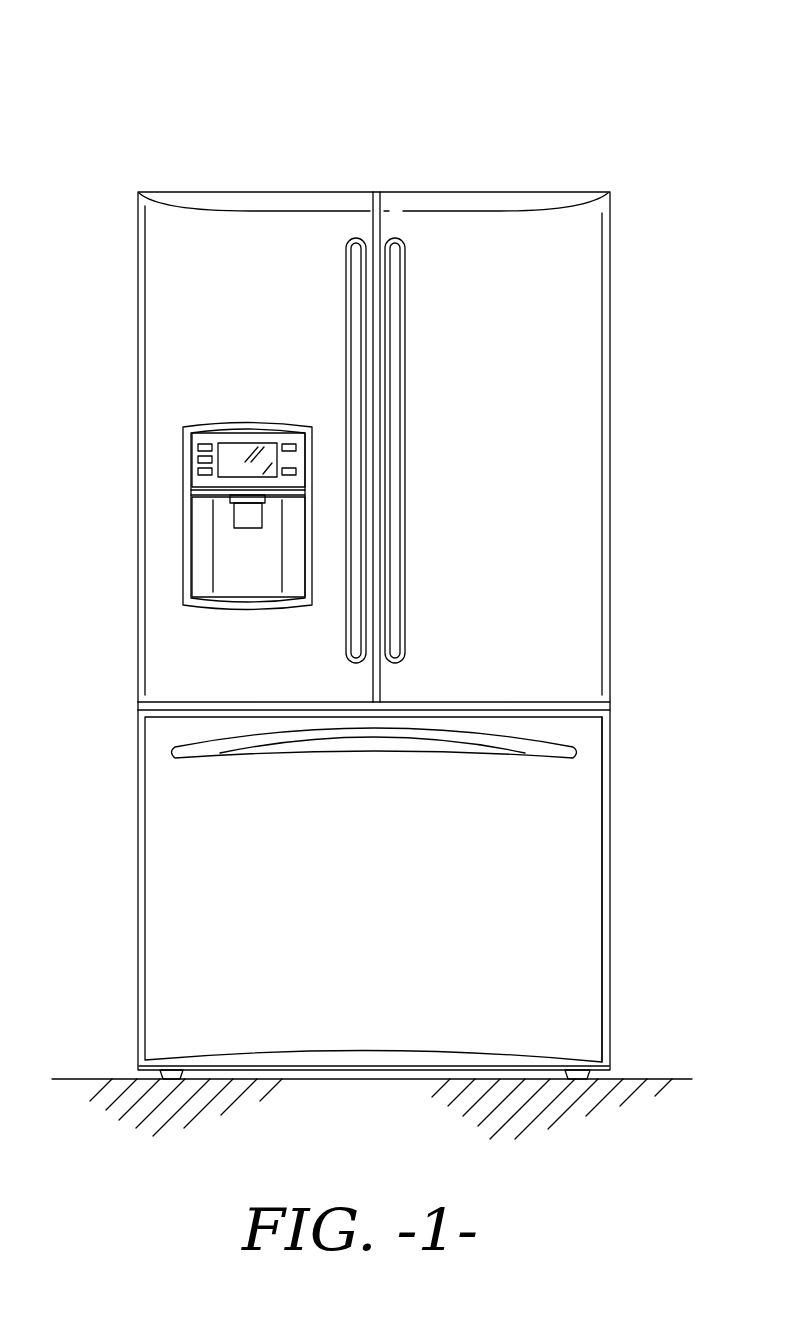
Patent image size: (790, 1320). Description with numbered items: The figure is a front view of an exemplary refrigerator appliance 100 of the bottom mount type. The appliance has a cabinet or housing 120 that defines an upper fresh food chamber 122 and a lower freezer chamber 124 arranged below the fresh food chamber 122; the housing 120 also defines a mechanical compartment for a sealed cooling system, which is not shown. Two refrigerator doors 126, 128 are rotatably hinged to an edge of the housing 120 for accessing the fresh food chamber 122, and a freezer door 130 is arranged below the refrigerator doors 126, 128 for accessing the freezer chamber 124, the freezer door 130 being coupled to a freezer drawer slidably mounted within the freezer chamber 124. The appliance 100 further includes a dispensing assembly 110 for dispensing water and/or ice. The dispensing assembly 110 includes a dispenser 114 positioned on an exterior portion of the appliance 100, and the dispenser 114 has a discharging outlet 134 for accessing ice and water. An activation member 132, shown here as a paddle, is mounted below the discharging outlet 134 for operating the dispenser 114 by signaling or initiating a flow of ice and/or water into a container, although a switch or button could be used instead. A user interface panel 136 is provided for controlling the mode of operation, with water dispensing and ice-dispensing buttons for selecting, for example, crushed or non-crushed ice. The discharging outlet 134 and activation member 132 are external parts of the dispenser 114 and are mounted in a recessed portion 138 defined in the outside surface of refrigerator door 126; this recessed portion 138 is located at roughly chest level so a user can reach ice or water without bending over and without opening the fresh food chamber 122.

The refrigerator appliance 100 is at (372, 579).
The dispensing assembly 110 is at (184, 511).
The dispenser 114 is at (242, 557).
The cabinet or housing 120 is at (138, 898).
The fresh food chamber 122 is at (574, 456).
The freezer chamber 124 is at (574, 838).
The refrigerator door 126 is at (168, 287).
The refrigerator door 128 is at (585, 330).
The freezer door 130 is at (578, 942).
The activation member 132 is at (243, 508).
The discharging outlet 134 is at (240, 530).
The user interface panel 136 is at (197, 453).
The recessed portion 138 is at (265, 578).